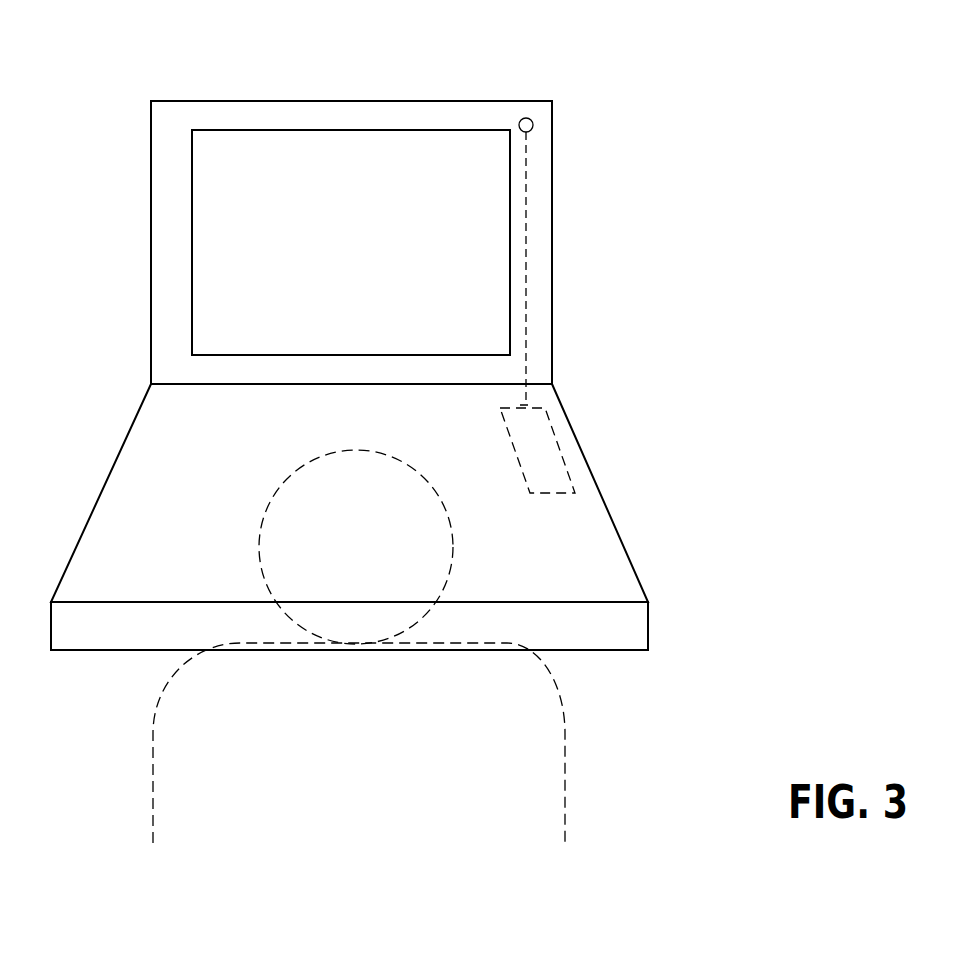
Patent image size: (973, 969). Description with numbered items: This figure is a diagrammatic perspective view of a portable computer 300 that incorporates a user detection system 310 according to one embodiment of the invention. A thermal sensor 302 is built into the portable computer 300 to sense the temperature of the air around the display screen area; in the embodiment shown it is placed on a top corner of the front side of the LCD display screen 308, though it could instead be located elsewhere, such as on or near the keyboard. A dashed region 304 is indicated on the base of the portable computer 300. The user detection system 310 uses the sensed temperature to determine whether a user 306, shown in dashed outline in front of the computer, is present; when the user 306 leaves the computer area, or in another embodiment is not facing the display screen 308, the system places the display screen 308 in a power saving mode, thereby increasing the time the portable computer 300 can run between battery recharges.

The portable computer 300 is at (377, 100).
The thermal sensor 302 is at (533, 124).
The sensor region on base 304 is at (555, 440).
The user 306 is at (565, 735).
The display screen 308 is at (371, 246).
The user detection system 310 is at (560, 226).